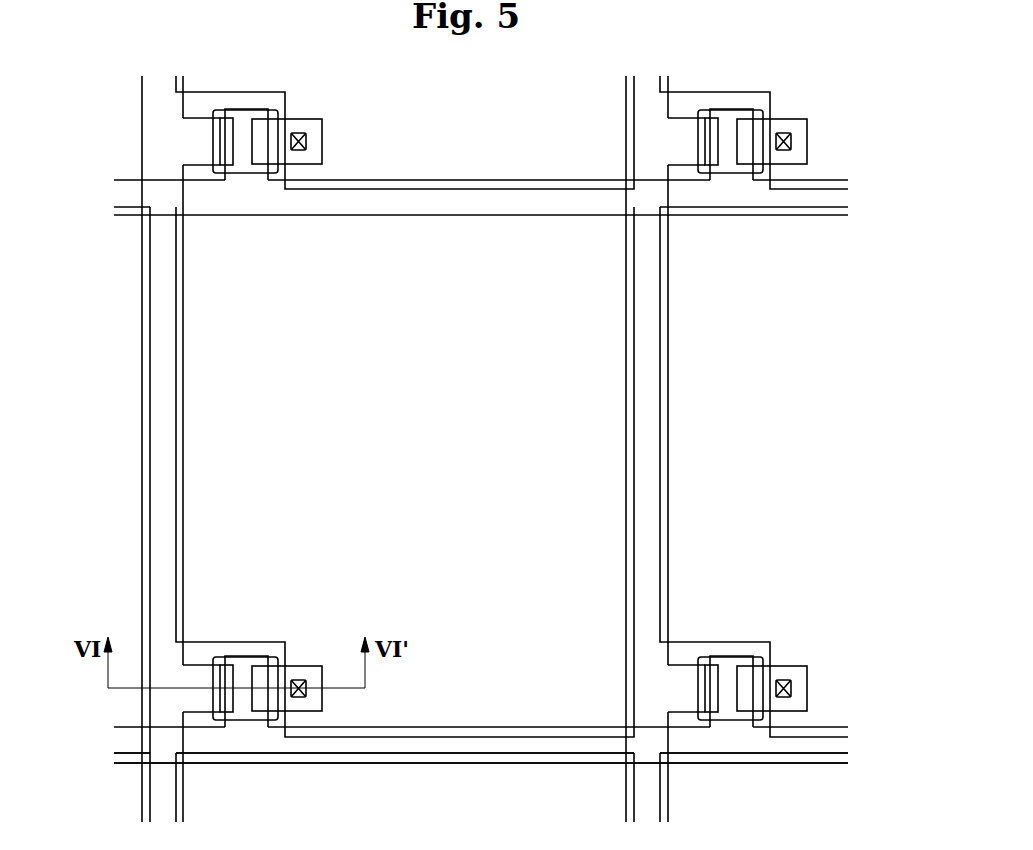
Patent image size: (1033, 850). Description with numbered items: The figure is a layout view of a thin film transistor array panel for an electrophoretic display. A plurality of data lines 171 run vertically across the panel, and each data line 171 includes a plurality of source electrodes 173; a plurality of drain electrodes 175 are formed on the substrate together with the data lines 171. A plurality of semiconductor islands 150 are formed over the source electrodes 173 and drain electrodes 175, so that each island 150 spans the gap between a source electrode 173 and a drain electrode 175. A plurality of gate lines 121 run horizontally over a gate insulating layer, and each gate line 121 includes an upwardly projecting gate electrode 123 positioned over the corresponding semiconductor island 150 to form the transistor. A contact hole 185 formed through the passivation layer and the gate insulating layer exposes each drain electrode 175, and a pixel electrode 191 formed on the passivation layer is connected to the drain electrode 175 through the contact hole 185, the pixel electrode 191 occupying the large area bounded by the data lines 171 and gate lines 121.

The gate line 121 is at (430, 764).
The gate electrode 123 is at (243, 664).
The semiconductor island 150 is at (274, 655).
The data line 171 is at (183, 481).
The source electrode 173 is at (203, 705).
The drain electrode 175 is at (303, 666).
The contact hole 185 is at (308, 692).
The pixel electrode 191 is at (176, 514).